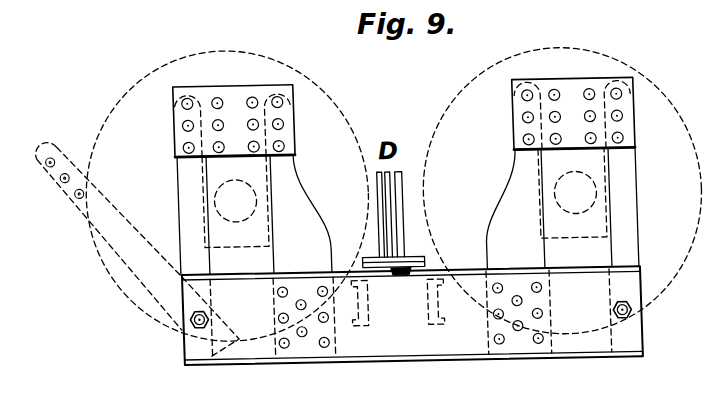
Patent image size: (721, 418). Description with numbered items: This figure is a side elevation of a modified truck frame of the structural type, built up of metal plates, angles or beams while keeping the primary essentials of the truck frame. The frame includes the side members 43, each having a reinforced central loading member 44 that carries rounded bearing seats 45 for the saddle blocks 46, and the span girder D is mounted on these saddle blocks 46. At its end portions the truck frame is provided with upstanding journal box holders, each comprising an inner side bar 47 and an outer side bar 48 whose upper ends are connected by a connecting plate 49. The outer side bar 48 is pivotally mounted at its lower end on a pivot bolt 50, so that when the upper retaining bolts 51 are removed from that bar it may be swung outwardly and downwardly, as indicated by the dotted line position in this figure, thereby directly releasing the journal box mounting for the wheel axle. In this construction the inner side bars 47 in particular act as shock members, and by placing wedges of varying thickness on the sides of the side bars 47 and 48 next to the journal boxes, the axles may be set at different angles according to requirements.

The side member 43 is at (412, 315).
The reinforced central loading member 44 is at (360, 288).
The rounded bearing seat 45 is at (396, 281).
The saddle block 46 is at (393, 236).
The inner side bar 47 is at (407, 211).
The outer side bar 48 is at (179, 216).
The connecting plate 49 is at (238, 106).
The pivot bolt 50 is at (188, 329).
The upper retaining bolt 51 is at (188, 148).